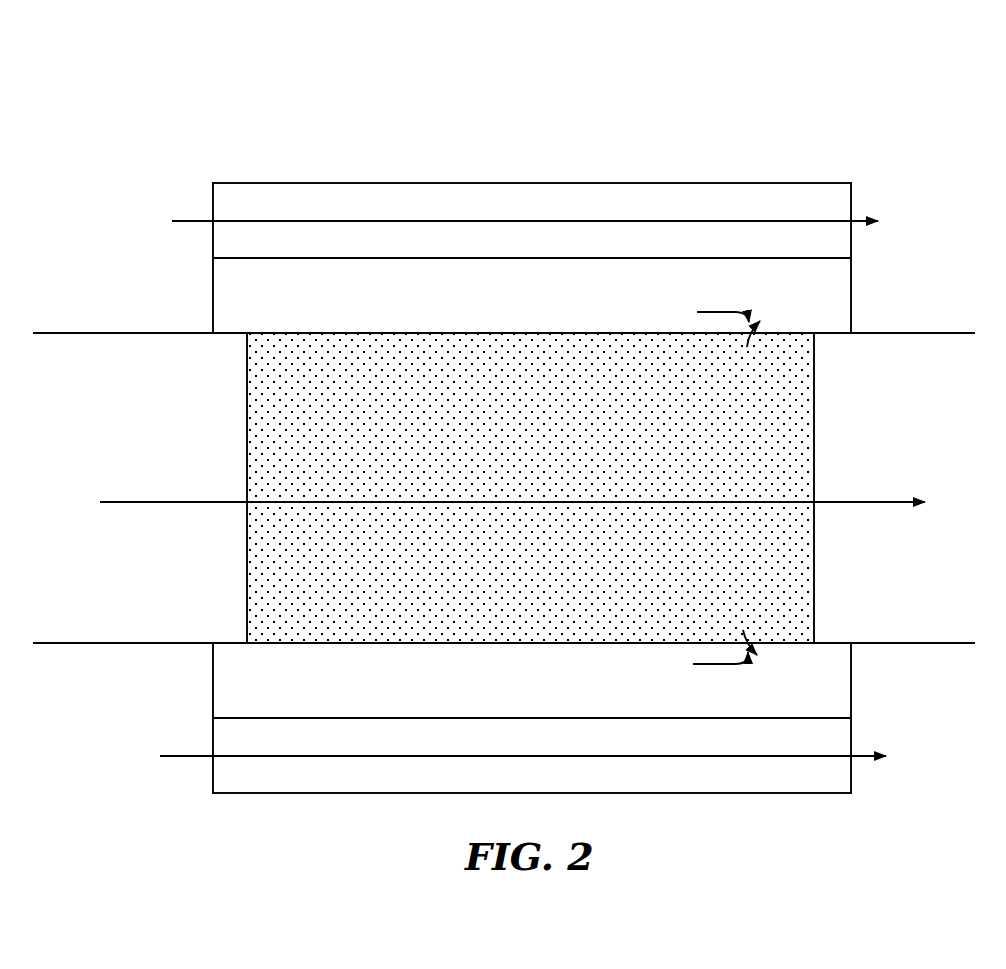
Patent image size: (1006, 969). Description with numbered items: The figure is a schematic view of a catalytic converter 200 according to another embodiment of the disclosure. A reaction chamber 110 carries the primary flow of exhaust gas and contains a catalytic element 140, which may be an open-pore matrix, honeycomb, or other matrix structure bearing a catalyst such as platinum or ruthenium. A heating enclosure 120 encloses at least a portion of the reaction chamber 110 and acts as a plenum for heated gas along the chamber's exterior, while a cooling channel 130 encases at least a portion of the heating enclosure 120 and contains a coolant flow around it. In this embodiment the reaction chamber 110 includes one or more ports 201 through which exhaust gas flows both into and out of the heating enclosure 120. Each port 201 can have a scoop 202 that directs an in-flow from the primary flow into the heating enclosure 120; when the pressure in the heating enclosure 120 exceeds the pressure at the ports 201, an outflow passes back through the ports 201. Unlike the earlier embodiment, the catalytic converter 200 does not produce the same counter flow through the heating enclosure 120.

The catalytic converter 200 is at (737, 116).
The reaction chamber 110 is at (196, 364).
The heating enclosure 120 is at (222, 272).
The cooling channel 130 is at (222, 198).
The catalytic element 140 is at (263, 437).
The port 201 is at (743, 333).
The scoop 202 is at (765, 334).